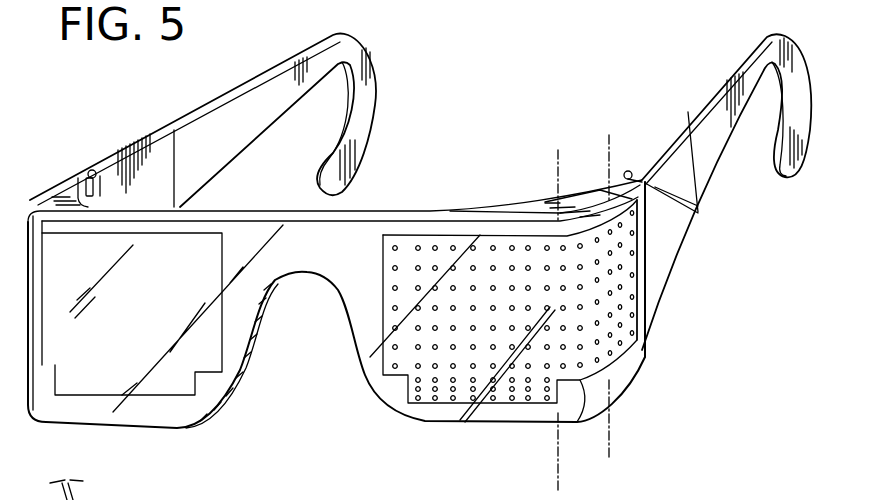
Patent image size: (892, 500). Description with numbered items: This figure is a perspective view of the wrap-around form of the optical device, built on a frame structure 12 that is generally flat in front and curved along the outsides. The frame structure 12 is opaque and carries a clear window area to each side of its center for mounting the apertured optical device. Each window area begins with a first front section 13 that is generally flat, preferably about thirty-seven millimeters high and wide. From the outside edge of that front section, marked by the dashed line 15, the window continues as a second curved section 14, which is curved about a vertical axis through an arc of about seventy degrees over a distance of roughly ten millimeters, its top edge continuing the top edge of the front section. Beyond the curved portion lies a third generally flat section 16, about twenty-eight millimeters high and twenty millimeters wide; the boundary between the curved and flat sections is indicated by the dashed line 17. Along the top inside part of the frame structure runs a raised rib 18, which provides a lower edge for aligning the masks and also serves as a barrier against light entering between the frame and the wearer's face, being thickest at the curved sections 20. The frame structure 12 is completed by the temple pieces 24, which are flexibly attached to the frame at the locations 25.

The frame structure 12 is at (292, 237).
The first front section 13 is at (390, 380).
The second curved section 14 is at (580, 407).
The dashed line indicating outside edge of front section 15 is at (561, 314).
The third generally flat section 16 is at (633, 350).
The dashed line indicating boundary between second and third sections 17 is at (612, 298).
The raised rib 18 is at (382, 210).
The curved sections 20 is at (55, 195).
The temple pieces 24 is at (275, 88).
The flexible attachment 25 is at (97, 183).